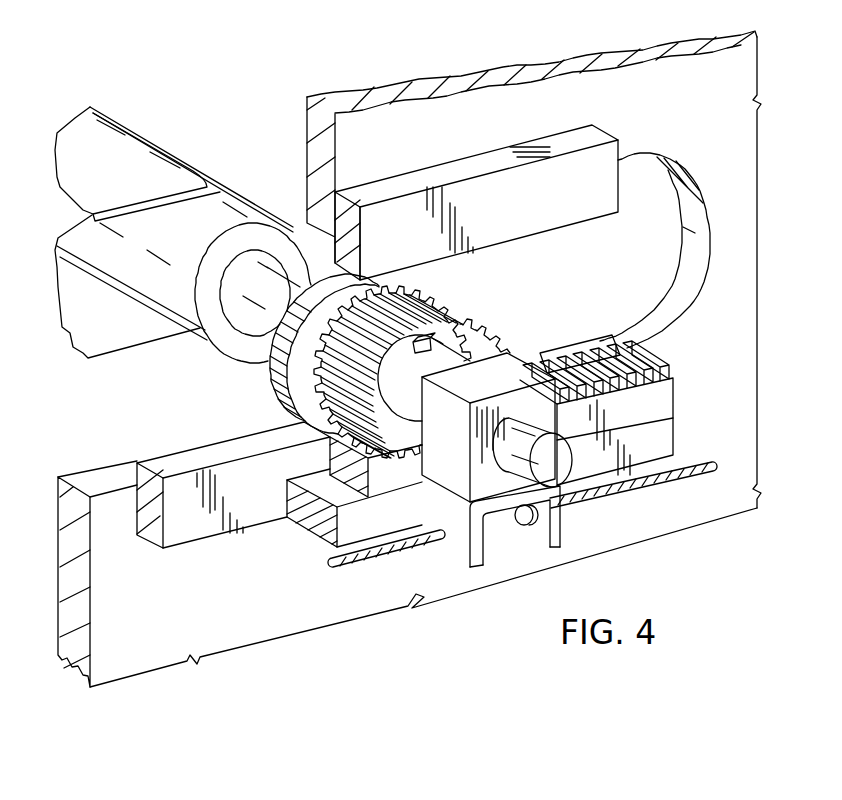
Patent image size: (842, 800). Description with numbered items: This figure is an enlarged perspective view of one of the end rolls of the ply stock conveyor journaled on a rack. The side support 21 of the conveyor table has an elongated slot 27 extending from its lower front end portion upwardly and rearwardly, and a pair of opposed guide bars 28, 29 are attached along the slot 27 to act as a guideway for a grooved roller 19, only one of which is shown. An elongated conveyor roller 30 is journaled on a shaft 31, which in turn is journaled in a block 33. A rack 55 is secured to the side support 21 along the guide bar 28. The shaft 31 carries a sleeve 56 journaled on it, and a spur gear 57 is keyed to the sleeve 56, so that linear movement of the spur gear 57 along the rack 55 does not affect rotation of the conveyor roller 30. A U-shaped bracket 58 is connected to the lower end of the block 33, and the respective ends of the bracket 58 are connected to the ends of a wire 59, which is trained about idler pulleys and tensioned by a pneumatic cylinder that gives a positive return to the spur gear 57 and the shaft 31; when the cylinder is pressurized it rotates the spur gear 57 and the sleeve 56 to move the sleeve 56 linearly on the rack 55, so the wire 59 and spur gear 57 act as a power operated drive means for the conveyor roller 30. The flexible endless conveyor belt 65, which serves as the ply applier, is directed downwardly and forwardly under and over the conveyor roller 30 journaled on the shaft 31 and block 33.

The grooved roller 19 is at (295, 370).
The side support 21 is at (630, 80).
The elongated slot 27 is at (648, 203).
The guide bar 28 is at (187, 527).
The guide bar 29 is at (463, 197).
The conveyor roller 30 is at (237, 213).
The shaft 31 is at (243, 280).
The block 33 is at (521, 375).
The rack 55 is at (654, 375).
The sleeve 56 is at (443, 357).
The spur gear 57 is at (427, 310).
The U-shaped bracket 58 is at (560, 538).
The wire 59 is at (382, 562).
The conveyor belt 65 is at (120, 150).